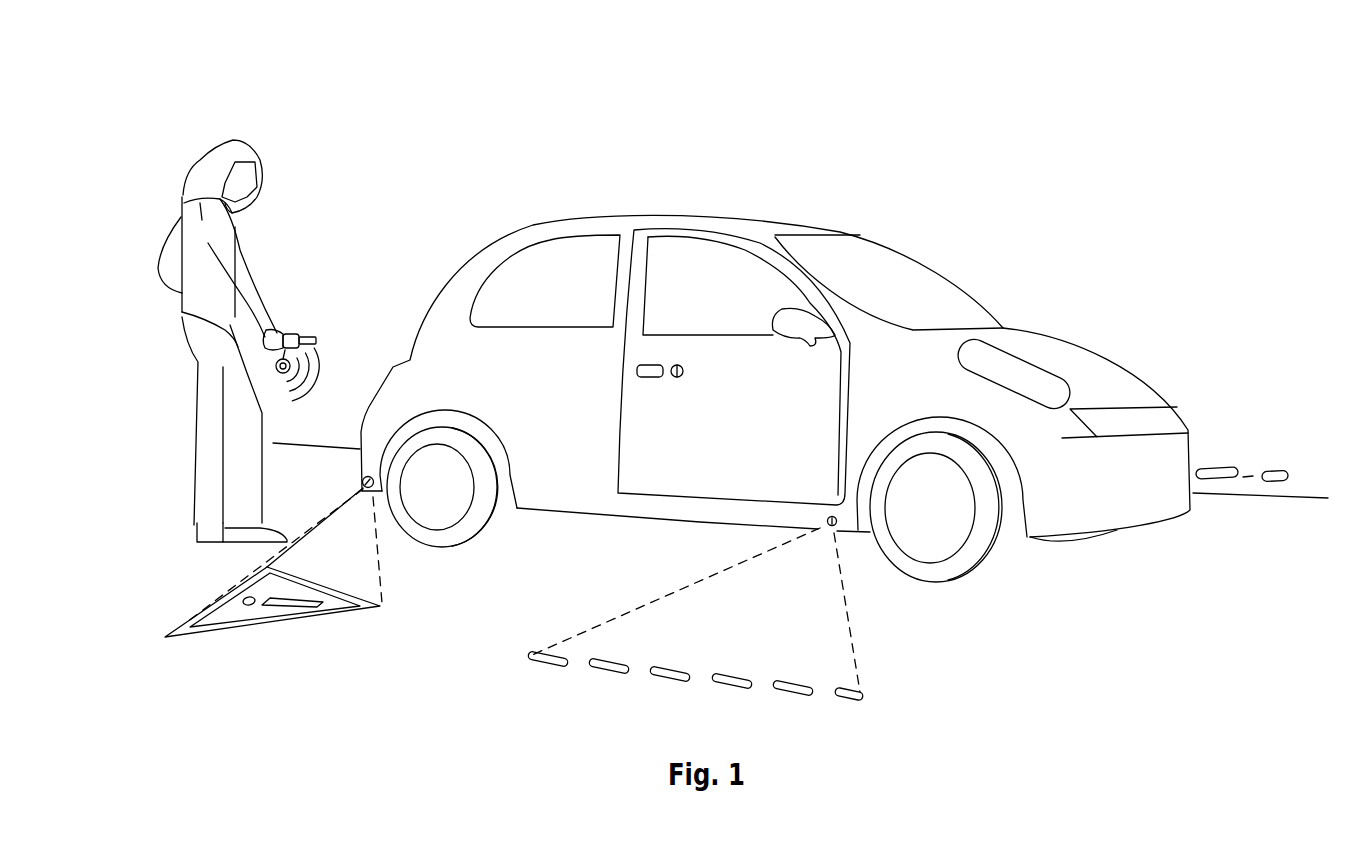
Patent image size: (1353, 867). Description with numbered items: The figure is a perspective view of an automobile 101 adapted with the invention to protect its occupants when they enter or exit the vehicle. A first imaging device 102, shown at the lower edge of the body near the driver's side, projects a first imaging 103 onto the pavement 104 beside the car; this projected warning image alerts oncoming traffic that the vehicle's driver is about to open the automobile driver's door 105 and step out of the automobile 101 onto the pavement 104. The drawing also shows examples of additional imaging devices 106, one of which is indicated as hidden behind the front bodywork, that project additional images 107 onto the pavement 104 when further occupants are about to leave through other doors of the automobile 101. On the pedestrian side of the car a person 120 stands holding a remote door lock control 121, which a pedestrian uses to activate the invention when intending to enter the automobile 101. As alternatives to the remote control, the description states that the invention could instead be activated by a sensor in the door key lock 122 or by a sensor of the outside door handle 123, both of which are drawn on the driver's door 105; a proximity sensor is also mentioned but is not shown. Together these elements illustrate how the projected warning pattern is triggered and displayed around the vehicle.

The automobile 101 is at (512, 233).
The first imaging device 102 is at (374, 491).
The first imaging 103 is at (312, 625).
The pavement 104 is at (1160, 688).
The automobile driver's door 105 is at (640, 230).
The additional imaging devices 106 is at (1050, 333).
The additional images 107 is at (1222, 470).
The user 120 is at (198, 166).
The remote door lock control 121 is at (300, 338).
The door key lock 122 is at (682, 367).
The outside door handle 123 is at (643, 370).